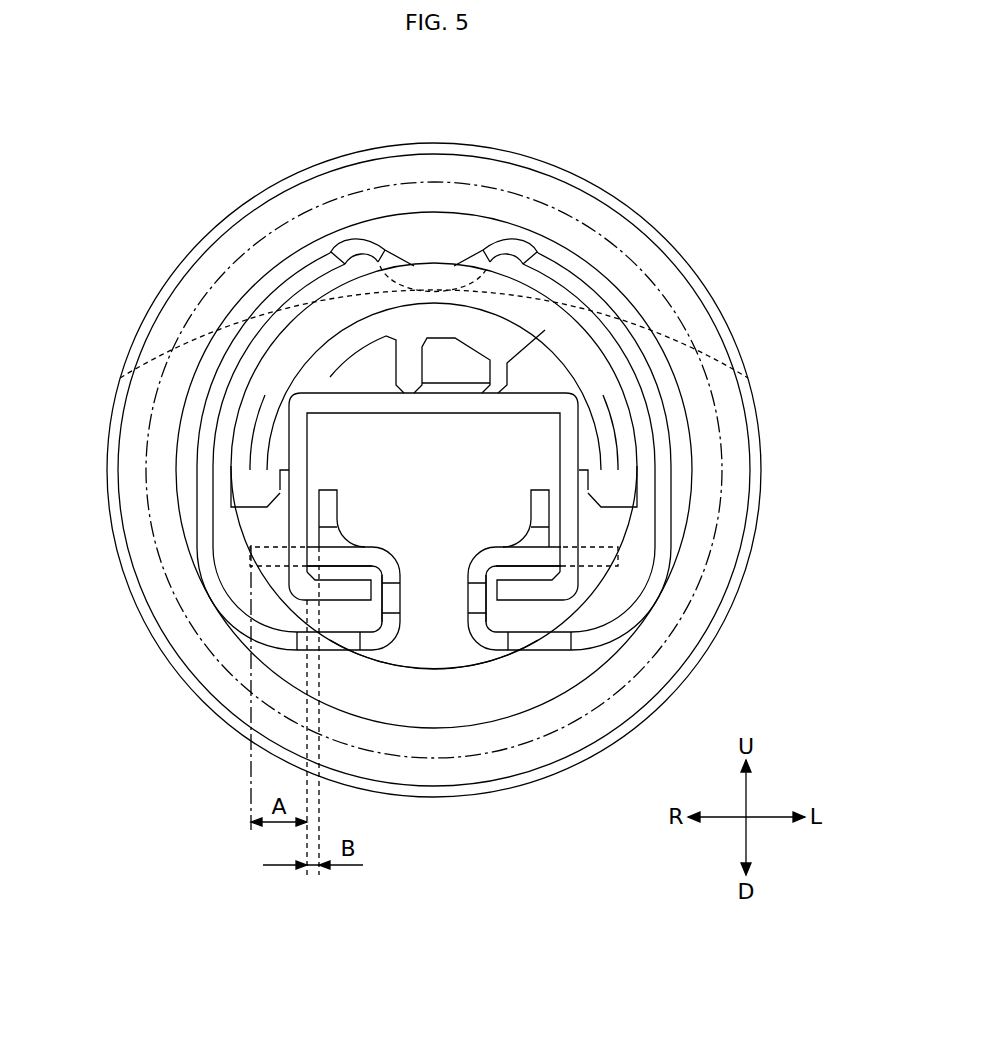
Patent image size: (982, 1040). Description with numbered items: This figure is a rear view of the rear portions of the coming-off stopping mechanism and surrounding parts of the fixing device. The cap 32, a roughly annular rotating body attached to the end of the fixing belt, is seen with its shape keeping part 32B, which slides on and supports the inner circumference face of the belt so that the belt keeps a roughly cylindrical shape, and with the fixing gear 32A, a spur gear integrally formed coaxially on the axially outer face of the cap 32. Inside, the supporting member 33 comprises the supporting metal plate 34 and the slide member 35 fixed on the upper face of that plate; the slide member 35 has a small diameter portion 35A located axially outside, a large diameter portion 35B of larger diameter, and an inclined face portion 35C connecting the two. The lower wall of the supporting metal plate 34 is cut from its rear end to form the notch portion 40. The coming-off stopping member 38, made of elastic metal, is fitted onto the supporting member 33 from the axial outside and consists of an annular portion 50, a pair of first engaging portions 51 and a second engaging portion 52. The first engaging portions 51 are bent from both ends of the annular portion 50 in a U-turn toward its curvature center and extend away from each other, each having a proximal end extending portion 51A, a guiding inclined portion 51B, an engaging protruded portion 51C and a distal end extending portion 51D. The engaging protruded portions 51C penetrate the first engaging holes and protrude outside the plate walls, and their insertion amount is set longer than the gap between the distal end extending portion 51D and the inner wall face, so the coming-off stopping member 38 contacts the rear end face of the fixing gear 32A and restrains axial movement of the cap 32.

The cap 32 is at (338, 156).
The fixing gear 32A is at (271, 187).
The shape keeping part 32B is at (467, 182).
The supporting member 33 is at (538, 454).
The supporting metal plate 34 is at (578, 425).
The slide member 35 is at (522, 393).
The small diameter portion 35A is at (650, 377).
The large diameter portion 35B is at (550, 325).
The inclined face portion 35C is at (545, 362).
The coming-off stopping member 38 is at (197, 476).
The notch portion 40 is at (441, 600).
The annular portion 50 is at (200, 404).
The first engaging portion 51 is at (333, 551).
The proximal end extending portion 51A is at (399, 607).
The guiding inclined portion 51B is at (348, 550).
The engaging protruded portion 51C is at (265, 556).
The distal end extending portion 51D is at (333, 492).
The second engaging portion 52 is at (125, 375).